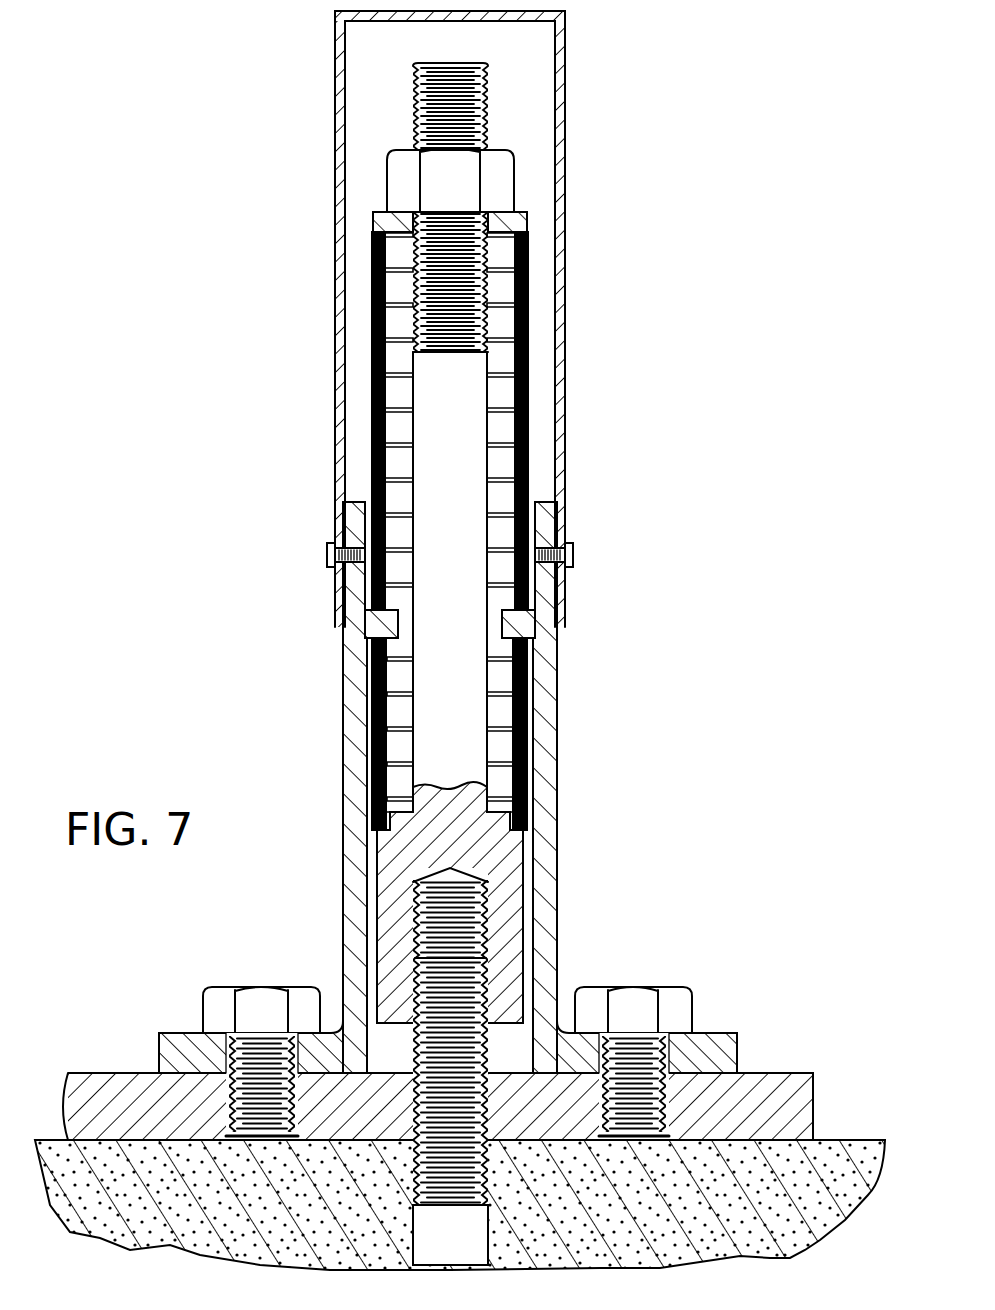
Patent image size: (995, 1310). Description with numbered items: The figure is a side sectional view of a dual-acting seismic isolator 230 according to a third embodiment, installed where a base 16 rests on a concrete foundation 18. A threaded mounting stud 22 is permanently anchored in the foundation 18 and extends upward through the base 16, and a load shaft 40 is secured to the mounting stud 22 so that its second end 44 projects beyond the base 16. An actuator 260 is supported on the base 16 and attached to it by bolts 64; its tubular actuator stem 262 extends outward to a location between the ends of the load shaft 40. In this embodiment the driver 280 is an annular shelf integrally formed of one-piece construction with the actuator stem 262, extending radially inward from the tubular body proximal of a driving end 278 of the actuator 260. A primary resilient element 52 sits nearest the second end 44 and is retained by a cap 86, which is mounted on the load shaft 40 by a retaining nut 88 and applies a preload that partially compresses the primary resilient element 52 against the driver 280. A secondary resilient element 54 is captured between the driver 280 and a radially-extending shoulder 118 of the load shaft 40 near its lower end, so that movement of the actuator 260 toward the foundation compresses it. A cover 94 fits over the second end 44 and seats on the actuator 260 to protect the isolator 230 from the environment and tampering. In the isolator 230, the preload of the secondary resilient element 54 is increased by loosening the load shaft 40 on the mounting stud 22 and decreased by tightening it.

The base 16 is at (803, 1110).
The concrete foundation 18 is at (852, 1146).
The mounting stud 22 is at (483, 1038).
The load shaft 40 is at (443, 437).
The second end 44 is at (497, 112).
The primary resilient element 52 is at (528, 342).
The secondary resilient element 54 is at (537, 713).
The bolt 64 is at (215, 985).
The cap 86 is at (522, 214).
The retaining nut 88 is at (394, 166).
The cover 94 is at (336, 176).
The shoulder 118 is at (378, 822).
The dual-acting seismic isolator 230 is at (520, 399).
The actuator 260 is at (448, 787).
The actuator stem 262 is at (555, 835).
The driving end 278 is at (567, 592).
The driver 280 is at (370, 625).